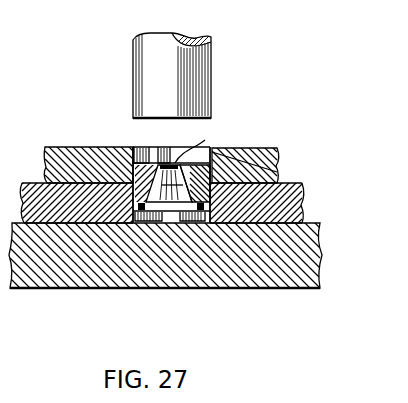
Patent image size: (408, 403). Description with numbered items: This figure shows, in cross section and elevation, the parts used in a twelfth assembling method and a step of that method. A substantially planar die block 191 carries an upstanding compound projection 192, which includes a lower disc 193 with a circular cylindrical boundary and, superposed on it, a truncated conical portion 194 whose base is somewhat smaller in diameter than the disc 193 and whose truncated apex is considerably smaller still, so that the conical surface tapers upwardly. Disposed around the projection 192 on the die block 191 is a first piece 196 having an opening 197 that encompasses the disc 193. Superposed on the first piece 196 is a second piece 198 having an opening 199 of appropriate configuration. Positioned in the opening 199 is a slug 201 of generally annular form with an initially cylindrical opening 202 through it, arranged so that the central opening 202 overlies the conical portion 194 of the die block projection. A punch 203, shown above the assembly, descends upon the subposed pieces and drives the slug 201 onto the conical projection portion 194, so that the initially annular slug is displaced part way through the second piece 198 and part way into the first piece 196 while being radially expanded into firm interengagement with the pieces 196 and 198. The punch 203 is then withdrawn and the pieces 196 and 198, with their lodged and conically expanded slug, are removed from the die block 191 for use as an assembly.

The die block 191 is at (322, 277).
The compound projection 192 is at (278, 150).
The lower disc 193 is at (150, 218).
The truncated conical portion 194 is at (170, 182).
The first piece 196 is at (301, 213).
The opening 197 is at (212, 207).
The second piece 198 is at (278, 177).
The opening 199 is at (152, 146).
The slug 201 is at (212, 142).
The cylindrical opening 202 is at (178, 147).
The punch 203 is at (153, 66).